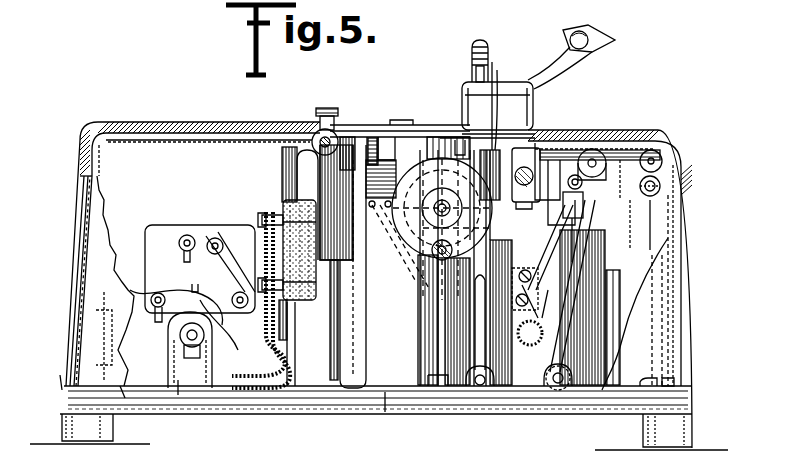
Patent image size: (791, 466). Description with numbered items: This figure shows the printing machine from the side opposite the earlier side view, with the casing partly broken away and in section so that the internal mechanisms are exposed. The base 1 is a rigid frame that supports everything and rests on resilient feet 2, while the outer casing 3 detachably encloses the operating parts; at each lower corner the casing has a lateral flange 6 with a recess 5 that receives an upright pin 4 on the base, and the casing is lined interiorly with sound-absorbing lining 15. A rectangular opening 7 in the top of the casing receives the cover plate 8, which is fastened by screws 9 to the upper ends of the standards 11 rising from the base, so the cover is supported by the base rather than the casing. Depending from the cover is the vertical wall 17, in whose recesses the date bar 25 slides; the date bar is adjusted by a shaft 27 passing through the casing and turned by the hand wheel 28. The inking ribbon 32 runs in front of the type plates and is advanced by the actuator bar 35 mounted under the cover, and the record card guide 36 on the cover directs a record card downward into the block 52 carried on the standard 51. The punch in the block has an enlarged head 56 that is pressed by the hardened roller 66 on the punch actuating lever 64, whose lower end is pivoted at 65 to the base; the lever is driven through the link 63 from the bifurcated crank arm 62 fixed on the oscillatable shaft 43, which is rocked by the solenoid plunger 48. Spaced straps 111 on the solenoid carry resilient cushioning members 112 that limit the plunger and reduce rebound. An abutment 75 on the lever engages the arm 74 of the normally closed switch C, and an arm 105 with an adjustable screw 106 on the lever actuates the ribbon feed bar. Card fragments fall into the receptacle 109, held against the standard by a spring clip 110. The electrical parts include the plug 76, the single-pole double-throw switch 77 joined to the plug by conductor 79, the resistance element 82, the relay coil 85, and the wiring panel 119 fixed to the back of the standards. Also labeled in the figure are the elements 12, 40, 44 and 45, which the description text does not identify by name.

The base 1 is at (208, 410).
The resilient feet 2 is at (98, 430).
The outer casing 3 is at (128, 122).
The upright pin 4 is at (70, 381).
The recess 5 is at (80, 333).
The lateral flange 6 is at (166, 438).
The rectangular opening 7 is at (310, 126).
The cover plate 8 is at (362, 128).
The screws 9 is at (330, 106).
The standards 11 is at (328, 354).
The frame web 12 is at (432, 272).
The lining 15 is at (215, 140).
The vertical wall 17 is at (475, 140).
The date bar 25 is at (470, 70).
The shaft 27 is at (448, 204).
The hand wheel 28 is at (405, 258).
The inking ribbon 32 is at (380, 126).
The actuator bar 35 is at (480, 128).
The record card guide 36 is at (552, 58).
The rod 40 is at (480, 392).
The oscillatable shaft 43 is at (660, 180).
The plate 44 is at (655, 210).
The link 45 is at (575, 250).
The solenoid plunger 48 is at (670, 240).
The standard 51 is at (466, 268).
The block 52 is at (495, 140).
The punch head 56 is at (548, 165).
The bifurcated crank arm 62 is at (665, 160).
The link 63 is at (636, 144).
The punch actuating lever 64 is at (545, 322).
The pivot 65 is at (560, 390).
The hardened roller 66 is at (582, 182).
The switch arm 74 is at (670, 222).
The abutment 75 is at (584, 200).
The plug 76 is at (90, 330).
The single-pole double-throw switch 77 is at (180, 340).
The conductor 79 is at (177, 413).
The resistance element 82 is at (296, 300).
The relay coil 85 is at (228, 228).
The arm 105 is at (618, 148).
The screw 106 is at (566, 140).
The receptacle 109 is at (382, 412).
The spring clip 110 is at (382, 310).
The straps 111 is at (490, 280).
The resilient cushioning members 112 is at (452, 208).
The wiring panel 119 is at (283, 180).
The switch C is at (515, 290).